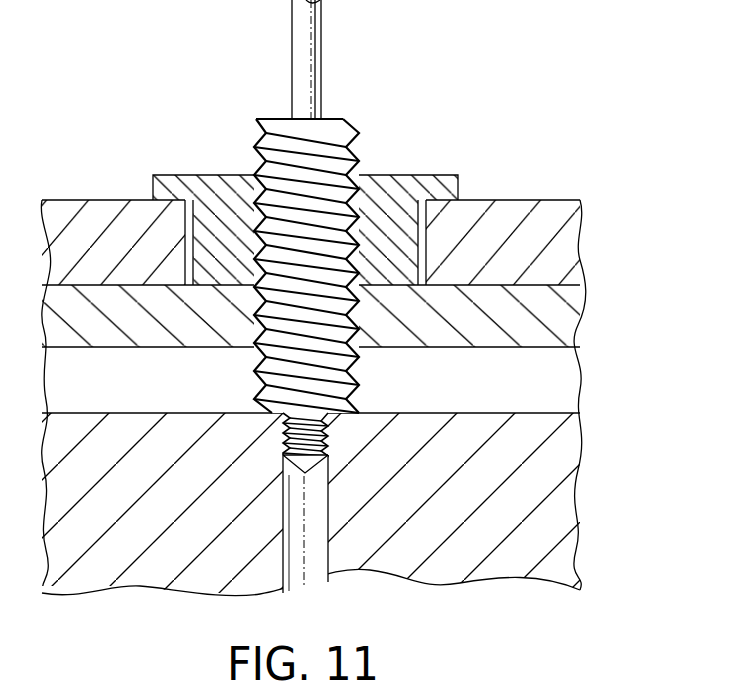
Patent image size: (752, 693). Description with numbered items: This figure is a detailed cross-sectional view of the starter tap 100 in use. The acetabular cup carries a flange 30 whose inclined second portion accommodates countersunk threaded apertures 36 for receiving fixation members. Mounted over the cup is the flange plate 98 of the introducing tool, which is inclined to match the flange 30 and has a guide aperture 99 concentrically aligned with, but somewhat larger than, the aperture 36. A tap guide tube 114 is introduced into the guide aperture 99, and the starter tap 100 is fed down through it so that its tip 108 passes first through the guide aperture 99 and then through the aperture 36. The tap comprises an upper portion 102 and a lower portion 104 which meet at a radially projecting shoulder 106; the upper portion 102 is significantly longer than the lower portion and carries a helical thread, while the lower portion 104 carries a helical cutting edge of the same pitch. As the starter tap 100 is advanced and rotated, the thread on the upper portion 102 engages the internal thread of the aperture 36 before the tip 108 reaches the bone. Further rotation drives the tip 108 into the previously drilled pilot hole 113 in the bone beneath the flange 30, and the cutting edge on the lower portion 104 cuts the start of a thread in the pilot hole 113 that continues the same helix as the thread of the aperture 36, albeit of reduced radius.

The starter tap 100 is at (384, 112).
The upper portion 102 is at (260, 123).
The tap guide tube 114 is at (430, 175).
The guide aperture 99 is at (427, 253).
The flange plate 98 is at (568, 200).
The flange 30 is at (573, 313).
The countersunk threaded aperture 36 is at (250, 344).
The shoulder 106 is at (265, 416).
The lower portion 104 is at (330, 435).
The tip 108 is at (328, 467).
The pilot hole 113 is at (316, 543).